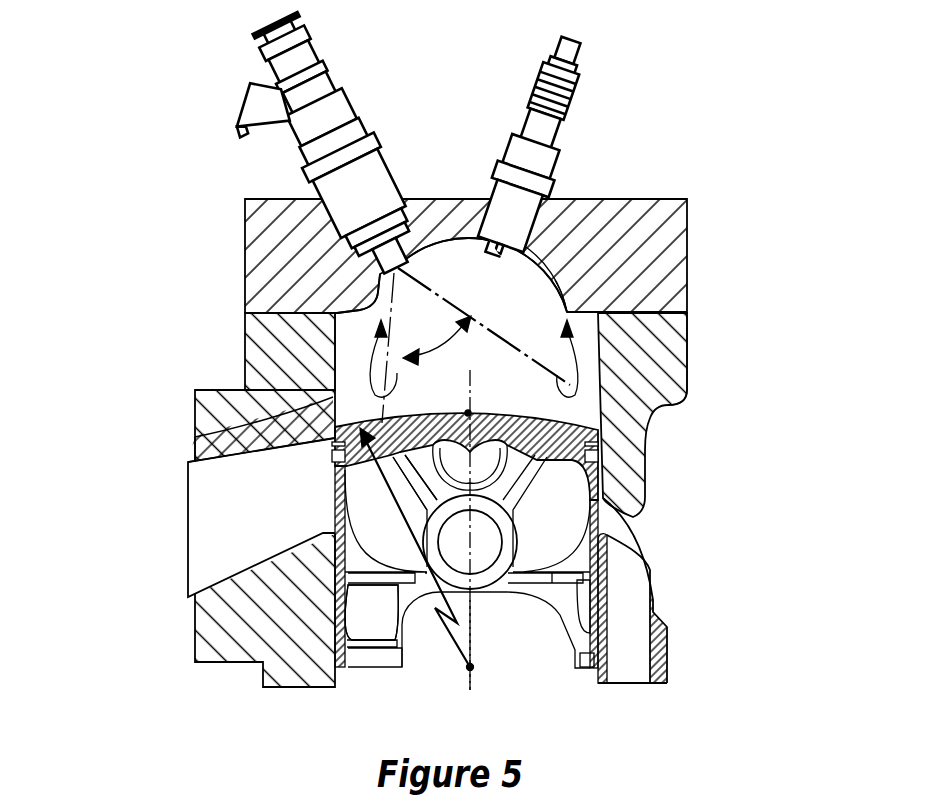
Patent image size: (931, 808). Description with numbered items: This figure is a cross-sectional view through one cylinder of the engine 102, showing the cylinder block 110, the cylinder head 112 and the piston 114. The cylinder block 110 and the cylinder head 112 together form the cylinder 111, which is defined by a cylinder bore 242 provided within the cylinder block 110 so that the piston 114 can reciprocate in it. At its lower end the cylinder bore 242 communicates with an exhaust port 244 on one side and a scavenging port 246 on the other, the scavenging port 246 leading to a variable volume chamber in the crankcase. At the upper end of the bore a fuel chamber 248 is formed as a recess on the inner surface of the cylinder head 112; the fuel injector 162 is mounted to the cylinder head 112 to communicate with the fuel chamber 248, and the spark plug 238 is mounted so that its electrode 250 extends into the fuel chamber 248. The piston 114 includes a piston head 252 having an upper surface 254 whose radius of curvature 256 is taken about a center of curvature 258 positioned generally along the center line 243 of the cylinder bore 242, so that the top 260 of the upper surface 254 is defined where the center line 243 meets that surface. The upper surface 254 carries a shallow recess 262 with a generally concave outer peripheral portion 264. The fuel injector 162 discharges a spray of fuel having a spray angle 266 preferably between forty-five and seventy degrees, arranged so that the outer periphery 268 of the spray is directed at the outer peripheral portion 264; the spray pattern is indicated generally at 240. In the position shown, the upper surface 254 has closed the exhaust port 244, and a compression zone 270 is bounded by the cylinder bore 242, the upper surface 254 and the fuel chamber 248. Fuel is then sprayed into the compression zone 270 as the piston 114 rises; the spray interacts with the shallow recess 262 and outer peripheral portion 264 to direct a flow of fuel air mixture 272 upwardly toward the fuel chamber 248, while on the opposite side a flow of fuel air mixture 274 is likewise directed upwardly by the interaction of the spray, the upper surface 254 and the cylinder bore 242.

The engine 102 is at (236, 320).
The cylinder block 110 is at (195, 418).
The cylinder 111 is at (195, 445).
The cylinder head 112 is at (262, 240).
The piston 114 is at (600, 480).
The fuel injector 162 is at (355, 133).
The spark plug 238 is at (533, 157).
The fuel spray pattern 240 is at (806, 278).
The cylinder bore 242 is at (193, 454).
The center line 243 is at (472, 640).
The exhaust port 244 is at (205, 515).
The scavenging port 246 is at (633, 570).
The fuel chamber 248 is at (540, 250).
The electrode 250 is at (470, 250).
The piston head 252 is at (600, 453).
The upper surface 254 is at (598, 420).
The radius of curvature 256 is at (403, 518).
The center of curvature 258 is at (417, 564).
The top 260 is at (468, 413).
The shallow recess 262 is at (578, 300).
The outer peripheral portion 264 is at (402, 453).
The spray angle 266 is at (442, 332).
The outer periphery 268 is at (428, 302).
The compression zone 270 is at (352, 335).
The flow of fuel air mixture 272 is at (367, 367).
The flow of fuel air mixture 274 is at (573, 348).